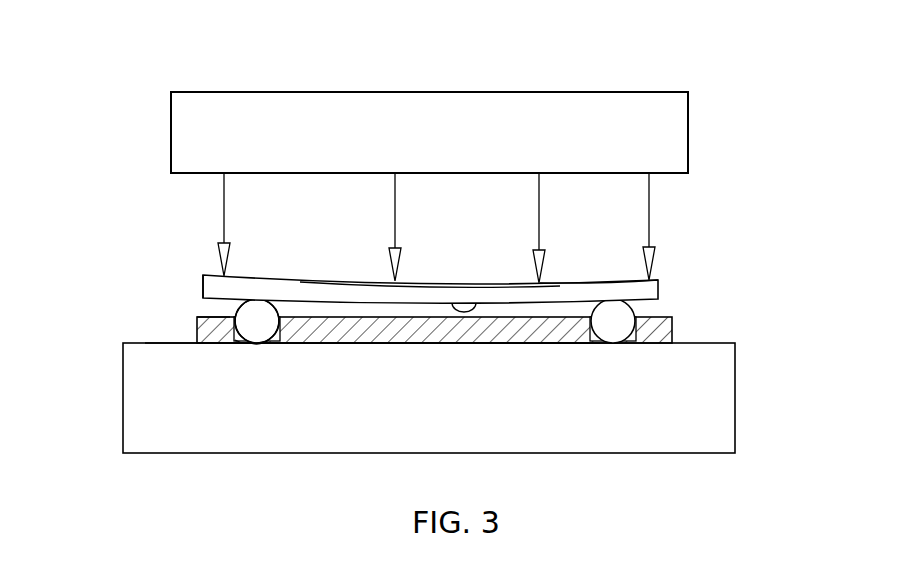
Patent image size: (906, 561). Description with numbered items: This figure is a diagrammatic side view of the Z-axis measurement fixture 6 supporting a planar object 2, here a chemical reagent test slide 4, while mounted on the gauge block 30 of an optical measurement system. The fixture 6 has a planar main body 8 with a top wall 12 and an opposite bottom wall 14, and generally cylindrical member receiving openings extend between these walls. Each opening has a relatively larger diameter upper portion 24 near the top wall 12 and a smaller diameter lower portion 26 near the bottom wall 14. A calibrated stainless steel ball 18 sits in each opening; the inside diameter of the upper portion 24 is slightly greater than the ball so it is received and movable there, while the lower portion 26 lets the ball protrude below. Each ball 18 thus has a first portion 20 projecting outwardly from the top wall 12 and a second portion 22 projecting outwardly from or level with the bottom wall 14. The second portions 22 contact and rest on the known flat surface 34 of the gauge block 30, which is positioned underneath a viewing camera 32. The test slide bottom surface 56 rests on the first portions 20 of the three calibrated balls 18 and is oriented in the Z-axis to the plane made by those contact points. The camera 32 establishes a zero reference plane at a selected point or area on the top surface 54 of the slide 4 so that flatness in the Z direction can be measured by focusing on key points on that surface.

The planar object 2 is at (212, 276).
The chemical reagent test slide 4 is at (203, 287).
The Z-axis measurement fixture 6 is at (196, 316).
The planar main body 8 is at (672, 330).
The top wall 12 is at (357, 316).
The bottom wall 14 is at (525, 345).
The stainless steel ball 18 is at (613, 330).
The first portion 20 is at (277, 303).
The second portion 22 is at (255, 345).
The upper portion 24 is at (277, 329).
The lower portion 26 is at (240, 345).
The gauge block 30 is at (630, 455).
The viewing camera 32 is at (688, 134).
The flat surface 34 is at (145, 343).
The top surface 54 is at (575, 280).
The test slide bottom surface 56 is at (470, 302).